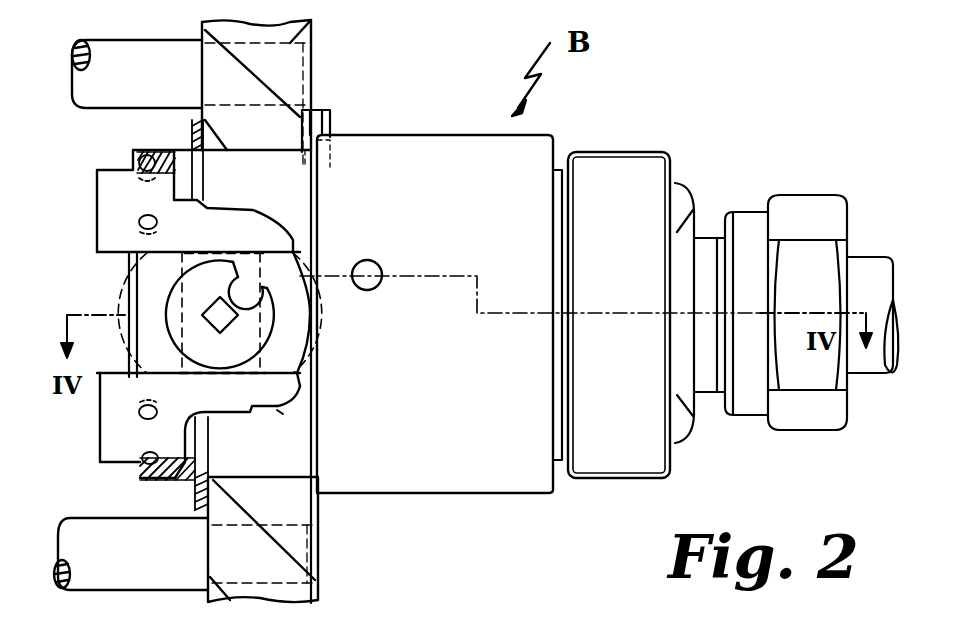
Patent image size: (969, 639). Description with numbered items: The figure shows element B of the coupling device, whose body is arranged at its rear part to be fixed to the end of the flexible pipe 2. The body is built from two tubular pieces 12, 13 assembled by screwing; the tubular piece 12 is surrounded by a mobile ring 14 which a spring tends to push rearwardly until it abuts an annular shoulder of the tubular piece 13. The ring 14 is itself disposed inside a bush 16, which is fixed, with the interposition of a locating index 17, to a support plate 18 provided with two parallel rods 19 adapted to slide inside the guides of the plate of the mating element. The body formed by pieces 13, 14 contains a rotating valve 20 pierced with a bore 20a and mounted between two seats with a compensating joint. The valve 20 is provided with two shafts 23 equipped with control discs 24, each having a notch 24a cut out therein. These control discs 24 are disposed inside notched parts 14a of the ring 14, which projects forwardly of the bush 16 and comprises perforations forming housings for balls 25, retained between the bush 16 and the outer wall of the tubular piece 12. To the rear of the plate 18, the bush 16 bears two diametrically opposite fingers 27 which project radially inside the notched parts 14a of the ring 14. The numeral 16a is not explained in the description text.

The flexible pipe 2 is at (863, 267).
The tubular piece 12 is at (130, 267).
The tubular piece 13 is at (683, 200).
The mobile ring 14 is at (620, 163).
The notched part 14a is at (110, 246).
The bush 16 is at (487, 475).
The lower clamping plate 16a is at (128, 469).
The index 17 is at (330, 117).
The support plate 18 is at (293, 505).
The parallel rods 19 is at (280, 68).
The rotating valve 20 is at (288, 342).
The bore 20a is at (277, 410).
The shaft 23 is at (223, 333).
The control disc 24 is at (217, 268).
The notch 24a is at (247, 280).
The ball 25 is at (143, 215).
The finger 27 is at (365, 290).